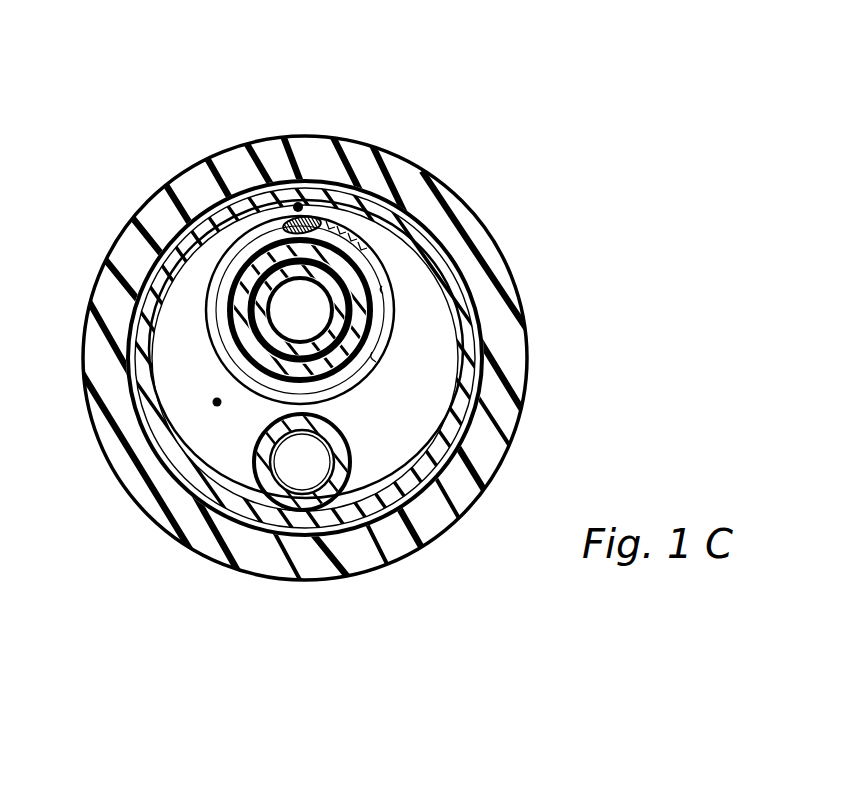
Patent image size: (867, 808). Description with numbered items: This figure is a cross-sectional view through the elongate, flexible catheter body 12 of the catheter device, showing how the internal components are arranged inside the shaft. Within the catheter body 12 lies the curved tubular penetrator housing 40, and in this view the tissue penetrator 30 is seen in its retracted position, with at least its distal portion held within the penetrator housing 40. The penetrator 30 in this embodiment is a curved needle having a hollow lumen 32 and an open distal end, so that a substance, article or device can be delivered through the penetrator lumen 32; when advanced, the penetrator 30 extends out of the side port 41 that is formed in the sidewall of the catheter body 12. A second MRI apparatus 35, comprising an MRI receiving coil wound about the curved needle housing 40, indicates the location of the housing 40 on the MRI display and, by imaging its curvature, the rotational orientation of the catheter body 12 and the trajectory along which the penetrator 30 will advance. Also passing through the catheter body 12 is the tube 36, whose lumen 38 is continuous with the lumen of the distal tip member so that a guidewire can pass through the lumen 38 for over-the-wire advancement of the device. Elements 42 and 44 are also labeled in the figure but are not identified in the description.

The catheter body 12 is at (227, 158).
The tissue penetrator 30 is at (352, 258).
The penetrator lumen 32 is at (317, 306).
The second MRI apparatus 35 is at (390, 327).
The tube 36 is at (322, 494).
The lumen 38 is at (298, 466).
The curved tubular penetrator housing 40 is at (331, 252).
The side port 41 is at (298, 206).
The interior lumen 42 is at (217, 402).
The liner 44 is at (460, 412).